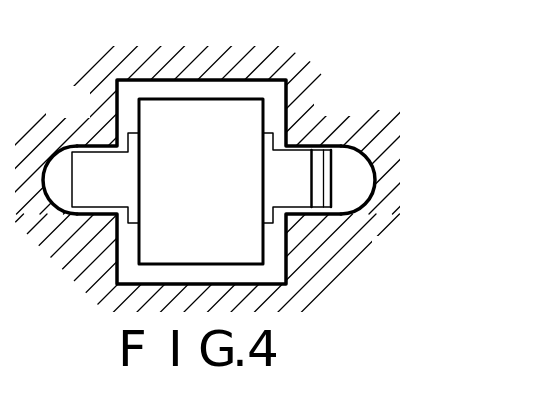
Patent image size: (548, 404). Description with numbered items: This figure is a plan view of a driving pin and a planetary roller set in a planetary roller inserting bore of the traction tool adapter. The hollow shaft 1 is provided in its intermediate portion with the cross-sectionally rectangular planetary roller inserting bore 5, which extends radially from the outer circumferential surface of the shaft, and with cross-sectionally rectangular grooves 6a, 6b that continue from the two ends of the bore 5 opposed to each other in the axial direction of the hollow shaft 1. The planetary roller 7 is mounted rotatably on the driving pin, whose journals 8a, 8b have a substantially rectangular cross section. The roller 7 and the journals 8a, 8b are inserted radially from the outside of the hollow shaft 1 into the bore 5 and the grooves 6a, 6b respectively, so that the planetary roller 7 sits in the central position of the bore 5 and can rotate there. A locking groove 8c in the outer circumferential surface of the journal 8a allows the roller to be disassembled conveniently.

The hollow shaft 1 is at (279, 53).
The planetary roller inserting bore 5 is at (127, 97).
The groove 6a is at (355, 193).
The groove 6b is at (57, 187).
The planetary roller 7 is at (181, 122).
The journal 8a is at (287, 172).
The journal 8b is at (88, 176).
The locking groove 8c is at (312, 202).